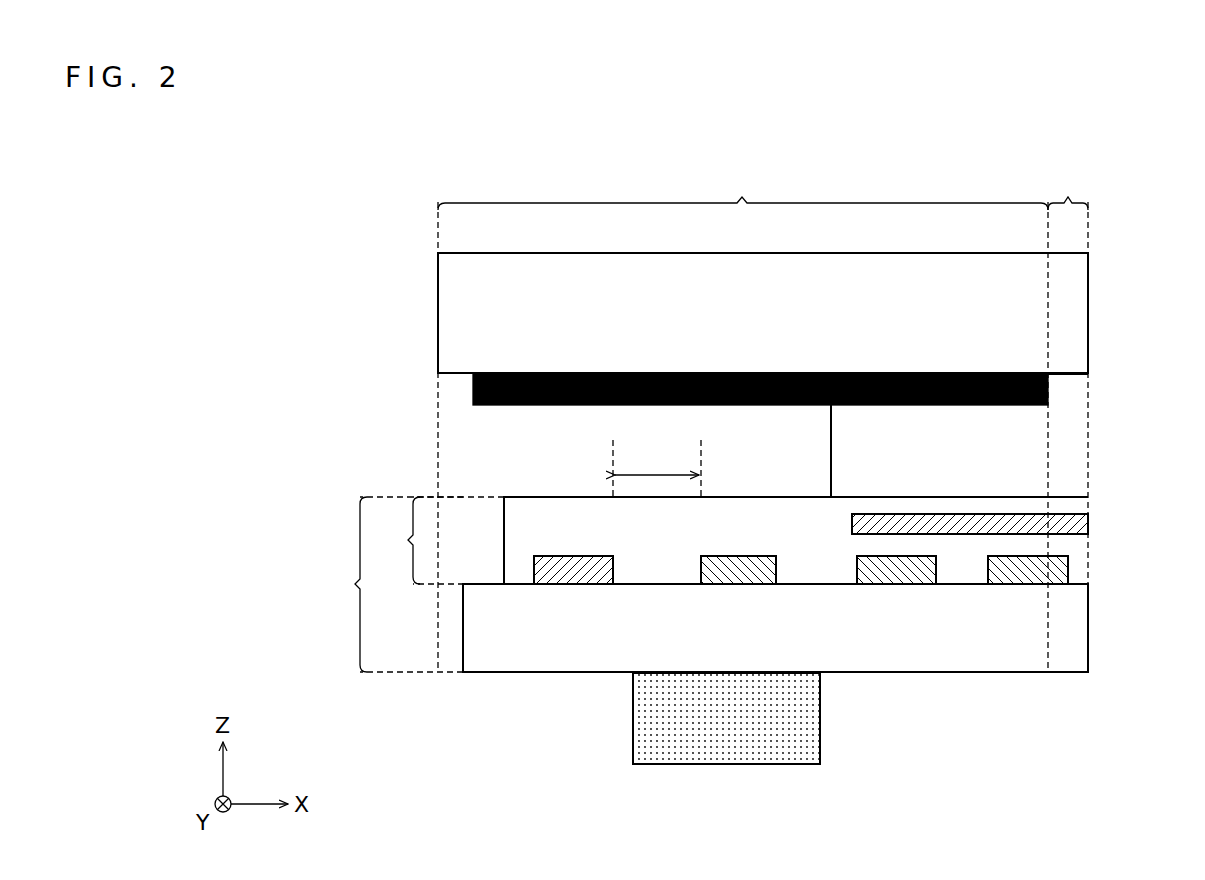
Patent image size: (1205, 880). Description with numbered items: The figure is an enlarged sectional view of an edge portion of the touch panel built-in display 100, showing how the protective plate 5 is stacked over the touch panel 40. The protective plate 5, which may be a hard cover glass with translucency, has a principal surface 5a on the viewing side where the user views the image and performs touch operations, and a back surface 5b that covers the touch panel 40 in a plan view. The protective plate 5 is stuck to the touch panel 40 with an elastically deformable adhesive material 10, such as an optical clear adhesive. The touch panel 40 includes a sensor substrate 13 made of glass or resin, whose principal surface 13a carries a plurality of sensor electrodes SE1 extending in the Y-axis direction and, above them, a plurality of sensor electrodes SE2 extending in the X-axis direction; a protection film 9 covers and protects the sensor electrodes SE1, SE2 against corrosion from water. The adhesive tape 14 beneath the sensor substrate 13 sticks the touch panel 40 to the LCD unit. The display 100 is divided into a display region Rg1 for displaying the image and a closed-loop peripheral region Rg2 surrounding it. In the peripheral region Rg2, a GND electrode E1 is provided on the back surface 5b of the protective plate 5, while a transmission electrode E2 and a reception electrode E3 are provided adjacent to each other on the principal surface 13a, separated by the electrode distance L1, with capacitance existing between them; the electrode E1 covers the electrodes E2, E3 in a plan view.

The touch panel built-in display 100 is at (1041, 137).
The protective plate 5 is at (455, 318).
The principal surface 5a is at (1066, 252).
The back surface 5b is at (1066, 374).
The electrode E1 is at (473, 386).
The electrode E2 is at (578, 556).
The electrode E3 is at (737, 556).
The electrode distance L1 is at (657, 468).
The protection film 9 is at (447, 540).
The adhesive material 10 is at (1060, 435).
The sensor substrate 13 is at (1060, 632).
The principal surface 13a is at (521, 588).
The adhesive tape 14 is at (785, 716).
The touch panel 40 is at (390, 584).
The sensor electrodes SE1 is at (1070, 572).
The sensor electrodes SE2 is at (1076, 530).
The display region Rg1 is at (1070, 189).
The peripheral region Rg2 is at (743, 189).